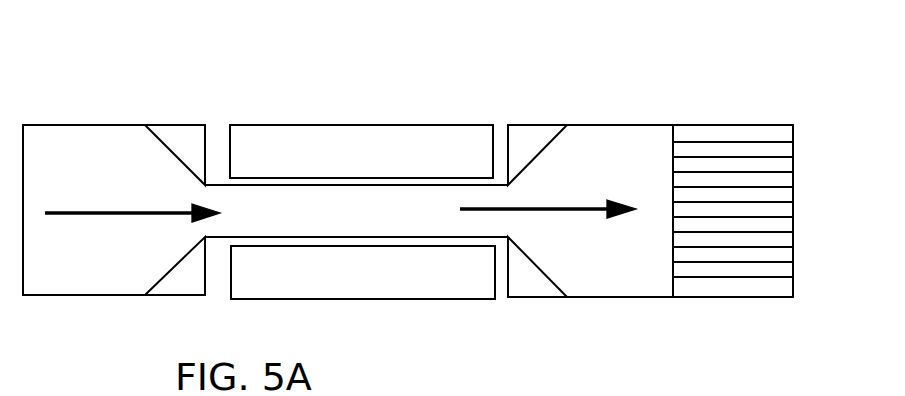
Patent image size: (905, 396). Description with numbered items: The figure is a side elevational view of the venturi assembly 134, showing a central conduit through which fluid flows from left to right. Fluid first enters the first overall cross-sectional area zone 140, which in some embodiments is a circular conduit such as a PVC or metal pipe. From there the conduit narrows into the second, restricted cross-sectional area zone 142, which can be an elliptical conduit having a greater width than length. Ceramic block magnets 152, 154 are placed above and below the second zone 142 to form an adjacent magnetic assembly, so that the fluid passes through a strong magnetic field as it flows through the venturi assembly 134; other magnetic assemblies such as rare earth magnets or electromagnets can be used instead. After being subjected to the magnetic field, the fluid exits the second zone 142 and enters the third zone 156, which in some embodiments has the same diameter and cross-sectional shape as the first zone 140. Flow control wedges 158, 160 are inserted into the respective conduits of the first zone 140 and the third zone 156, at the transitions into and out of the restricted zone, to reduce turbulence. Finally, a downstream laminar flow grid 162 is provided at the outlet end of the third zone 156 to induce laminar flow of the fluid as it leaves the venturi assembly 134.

The venturi assembly 134 is at (417, 181).
The first overall cross-sectional area zone 140 is at (93, 165).
The second, restricted cross-sectional area zone 142 is at (300, 203).
The ceramic block magnet 152 is at (427, 133).
The ceramic block magnet 154 is at (417, 288).
The third zone 156 is at (588, 155).
The flow control wedge 158 is at (190, 142).
The flow control wedge 160 is at (523, 140).
The downstream laminar flow grid 162 is at (735, 137).